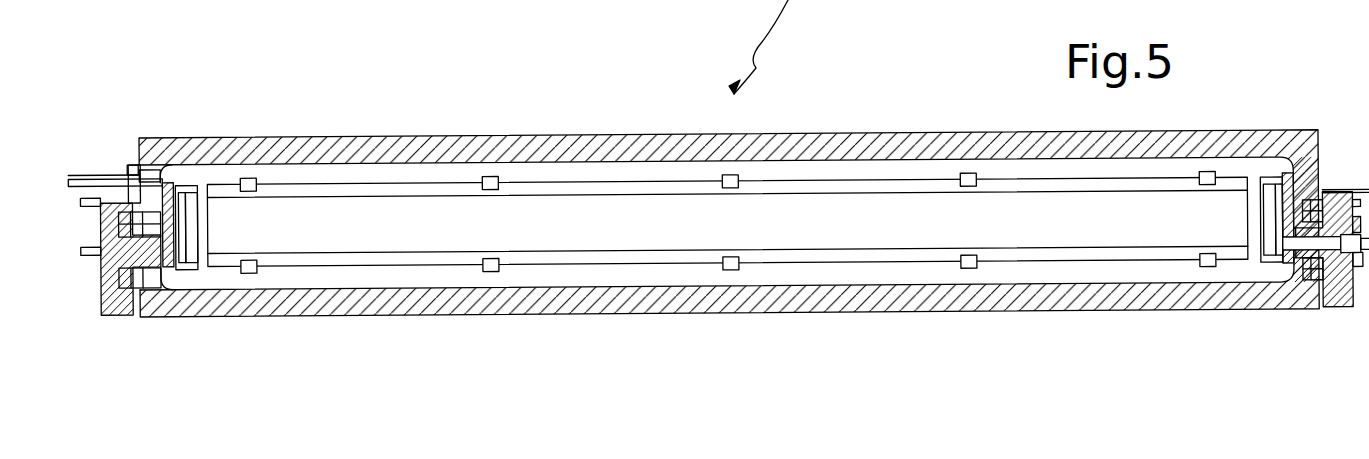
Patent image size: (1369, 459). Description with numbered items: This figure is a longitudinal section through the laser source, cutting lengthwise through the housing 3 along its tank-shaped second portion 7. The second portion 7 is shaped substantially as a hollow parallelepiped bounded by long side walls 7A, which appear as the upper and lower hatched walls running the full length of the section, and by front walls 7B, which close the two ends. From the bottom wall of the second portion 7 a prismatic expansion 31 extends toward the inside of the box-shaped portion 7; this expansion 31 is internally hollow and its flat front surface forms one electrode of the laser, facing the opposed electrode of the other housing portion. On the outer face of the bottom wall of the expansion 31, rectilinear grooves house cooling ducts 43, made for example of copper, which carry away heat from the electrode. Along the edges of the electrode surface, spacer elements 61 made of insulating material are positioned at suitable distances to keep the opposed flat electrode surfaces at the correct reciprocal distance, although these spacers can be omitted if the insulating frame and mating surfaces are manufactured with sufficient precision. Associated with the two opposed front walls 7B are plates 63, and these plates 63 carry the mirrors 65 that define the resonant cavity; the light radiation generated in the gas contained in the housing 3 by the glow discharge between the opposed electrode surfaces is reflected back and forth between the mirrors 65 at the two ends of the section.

The housing 3 is at (729, 219).
The second portion 7 is at (729, 235).
The long side walls 7A is at (852, 148).
The front walls 7B is at (1293, 175).
The expansion 31 is at (350, 226).
The cooling ducts 43 is at (1348, 198).
The spacer elements 61 is at (249, 180).
The plates 63 is at (117, 317).
The mirrors 65 is at (188, 236).